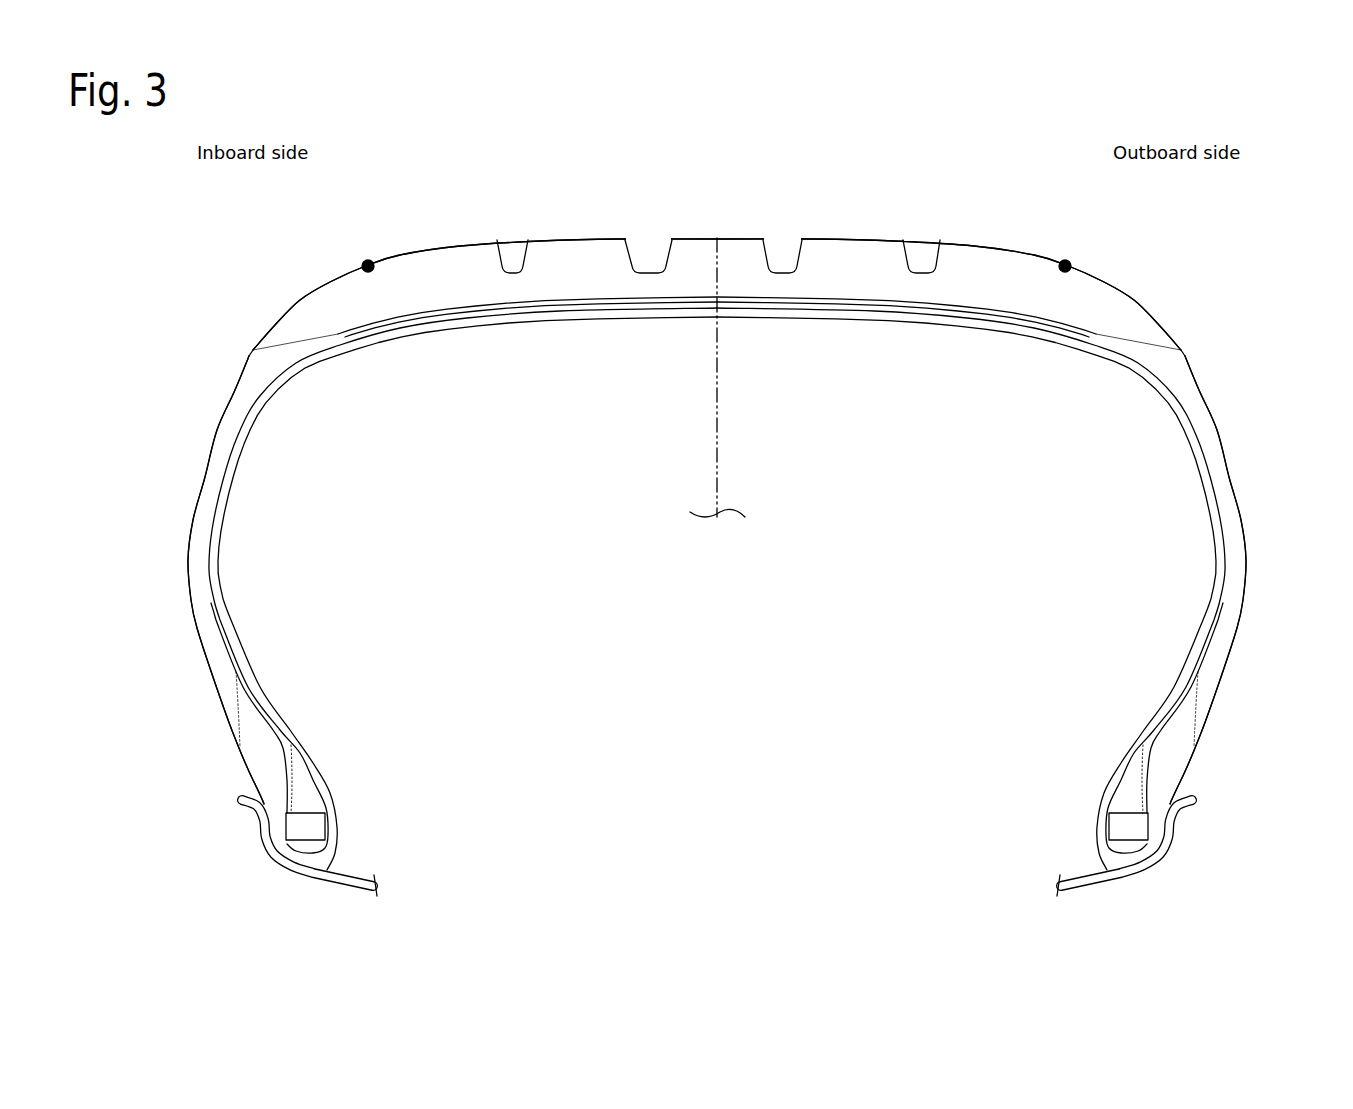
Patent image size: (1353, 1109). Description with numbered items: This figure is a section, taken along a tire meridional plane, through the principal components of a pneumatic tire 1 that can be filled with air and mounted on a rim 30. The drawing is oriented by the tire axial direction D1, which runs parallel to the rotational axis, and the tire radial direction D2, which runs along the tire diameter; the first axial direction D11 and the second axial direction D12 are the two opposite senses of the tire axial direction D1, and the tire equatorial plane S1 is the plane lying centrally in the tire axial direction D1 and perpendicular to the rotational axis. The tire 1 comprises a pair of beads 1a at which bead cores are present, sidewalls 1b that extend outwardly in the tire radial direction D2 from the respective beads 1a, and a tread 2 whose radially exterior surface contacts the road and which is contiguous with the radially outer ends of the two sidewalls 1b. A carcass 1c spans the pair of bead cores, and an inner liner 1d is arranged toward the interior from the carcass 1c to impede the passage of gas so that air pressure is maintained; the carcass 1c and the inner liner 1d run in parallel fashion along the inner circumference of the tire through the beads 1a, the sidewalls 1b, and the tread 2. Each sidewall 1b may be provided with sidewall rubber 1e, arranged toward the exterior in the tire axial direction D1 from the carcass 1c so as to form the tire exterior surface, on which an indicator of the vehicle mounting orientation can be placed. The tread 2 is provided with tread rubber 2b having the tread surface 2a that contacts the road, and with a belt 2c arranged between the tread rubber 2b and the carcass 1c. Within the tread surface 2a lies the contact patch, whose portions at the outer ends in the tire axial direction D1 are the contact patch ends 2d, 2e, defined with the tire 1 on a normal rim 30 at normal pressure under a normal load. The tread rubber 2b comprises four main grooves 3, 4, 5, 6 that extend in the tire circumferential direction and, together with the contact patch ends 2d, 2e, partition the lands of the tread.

The tire 1 is at (723, 496).
The beads 1a is at (236, 772).
The sidewalls 1b is at (198, 434).
The carcass 1c is at (467, 318).
The inner liner 1d is at (870, 325).
The sidewall rubber 1e is at (202, 507).
The tread 2 is at (717, 266).
The tread surface 2a is at (445, 248).
The tread rubber 2b is at (850, 252).
The belt 2c is at (588, 302).
The contact patch end 2d is at (1065, 261).
The contact patch end 2e is at (368, 261).
The main groove 3 is at (920, 245).
The main groove 4 is at (516, 245).
The main groove 5 is at (780, 243).
The main groove 6 is at (648, 243).
The rim 30 is at (306, 881).
The tire equatorial plane S1 is at (717, 455).
The tire axial direction D1 is at (770, 792).
The tire radial direction D2 is at (717, 863).
The first axial direction D11 is at (1125, 177).
The second axial direction D12 is at (300, 177).